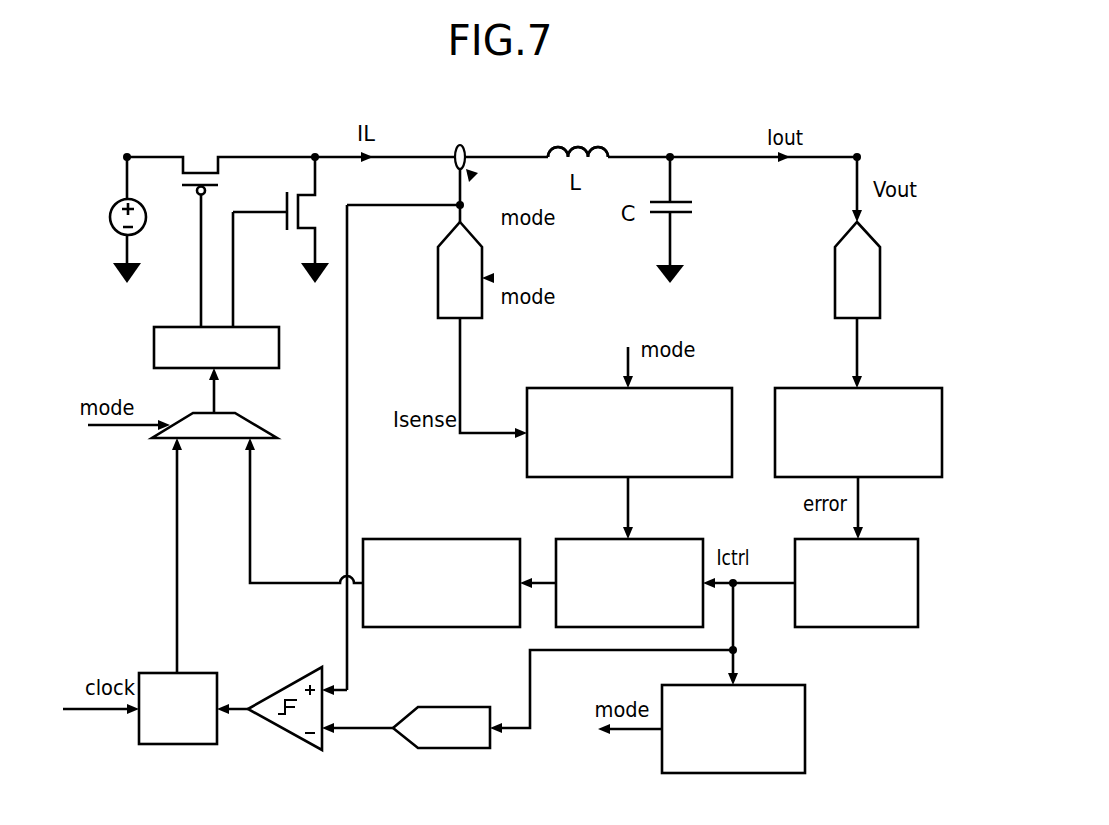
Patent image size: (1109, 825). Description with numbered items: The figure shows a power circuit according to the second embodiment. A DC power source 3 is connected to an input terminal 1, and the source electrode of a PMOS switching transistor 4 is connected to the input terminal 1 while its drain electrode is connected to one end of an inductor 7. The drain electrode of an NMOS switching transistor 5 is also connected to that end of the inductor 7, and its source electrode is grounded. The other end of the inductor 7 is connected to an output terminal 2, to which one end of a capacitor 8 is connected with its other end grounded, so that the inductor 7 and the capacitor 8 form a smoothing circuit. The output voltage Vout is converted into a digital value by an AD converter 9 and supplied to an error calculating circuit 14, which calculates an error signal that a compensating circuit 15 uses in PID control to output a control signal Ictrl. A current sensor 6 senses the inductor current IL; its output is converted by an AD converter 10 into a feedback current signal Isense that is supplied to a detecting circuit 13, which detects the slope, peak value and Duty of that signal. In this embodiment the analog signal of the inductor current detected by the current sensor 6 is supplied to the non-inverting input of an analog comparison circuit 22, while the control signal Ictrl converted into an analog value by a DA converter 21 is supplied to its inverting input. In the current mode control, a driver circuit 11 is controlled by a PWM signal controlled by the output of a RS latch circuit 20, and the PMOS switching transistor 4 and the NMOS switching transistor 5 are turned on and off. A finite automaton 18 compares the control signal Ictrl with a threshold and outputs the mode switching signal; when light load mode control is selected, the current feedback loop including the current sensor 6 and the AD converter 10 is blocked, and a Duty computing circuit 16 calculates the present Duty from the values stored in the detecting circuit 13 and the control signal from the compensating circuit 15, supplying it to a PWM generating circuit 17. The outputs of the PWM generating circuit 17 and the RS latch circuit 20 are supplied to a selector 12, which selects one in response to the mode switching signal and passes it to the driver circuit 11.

The input terminal 1 is at (127, 154).
The output terminal 2 is at (857, 153).
The DC power source 3 is at (143, 224).
The PMOS switching transistor 4 is at (201, 164).
The NMOS switching transistor 5 is at (286, 227).
The current sensor 6 is at (460, 145).
The inductor 7 is at (576, 147).
The capacitor 8 is at (686, 202).
The AD converter 9 is at (835, 279).
The AD converter 10 is at (438, 277).
The driver circuit 11 is at (256, 327).
The selector 12 is at (254, 422).
The detecting circuit 13 is at (705, 388).
The error calculating circuit 14 is at (882, 388).
The compensating circuit 15 is at (882, 539).
The Duty computing circuit 16 is at (662, 539).
The PWM generating circuit 17 is at (462, 539).
The finite automaton 18 is at (767, 685).
The RS latch circuit 20 is at (174, 744).
The DA converter 21 is at (462, 707).
The analog comparison circuit 22 is at (305, 752).